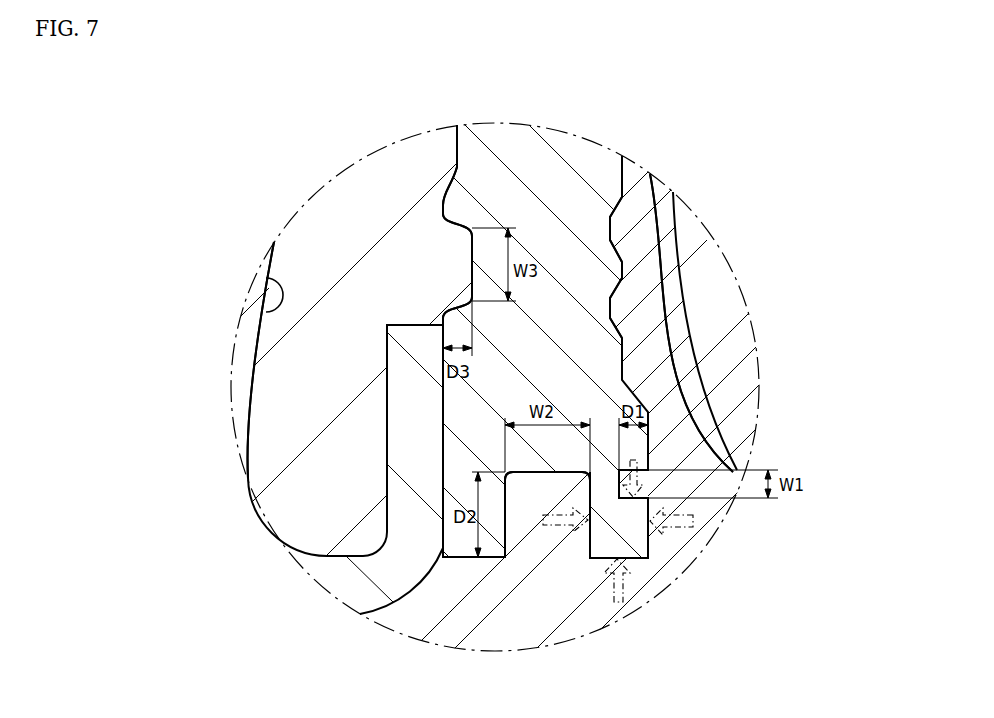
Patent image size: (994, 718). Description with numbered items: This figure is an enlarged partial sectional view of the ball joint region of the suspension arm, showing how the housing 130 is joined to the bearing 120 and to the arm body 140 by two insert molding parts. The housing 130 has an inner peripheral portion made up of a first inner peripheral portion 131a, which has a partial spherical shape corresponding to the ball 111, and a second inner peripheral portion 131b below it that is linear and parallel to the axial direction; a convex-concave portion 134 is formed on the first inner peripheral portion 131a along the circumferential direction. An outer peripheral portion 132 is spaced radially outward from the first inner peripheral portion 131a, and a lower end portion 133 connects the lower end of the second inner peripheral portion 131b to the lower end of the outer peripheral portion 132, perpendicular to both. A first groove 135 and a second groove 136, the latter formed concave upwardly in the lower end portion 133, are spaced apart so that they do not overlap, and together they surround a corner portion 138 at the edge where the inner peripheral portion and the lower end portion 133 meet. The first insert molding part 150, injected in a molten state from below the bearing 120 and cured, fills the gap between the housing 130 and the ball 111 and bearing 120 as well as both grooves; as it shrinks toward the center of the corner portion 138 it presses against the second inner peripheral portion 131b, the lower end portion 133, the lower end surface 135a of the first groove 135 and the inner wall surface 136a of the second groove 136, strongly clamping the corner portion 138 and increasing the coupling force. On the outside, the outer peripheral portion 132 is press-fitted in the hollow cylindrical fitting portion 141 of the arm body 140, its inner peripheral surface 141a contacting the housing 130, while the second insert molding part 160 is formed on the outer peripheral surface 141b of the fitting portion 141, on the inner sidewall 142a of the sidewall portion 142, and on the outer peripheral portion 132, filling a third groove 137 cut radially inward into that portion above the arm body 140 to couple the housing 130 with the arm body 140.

The ball 111 is at (727, 326).
The bearing 120 is at (676, 313).
The housing 130 is at (563, 173).
The first inner peripheral portion 131a is at (628, 220).
The second inner peripheral portion 131b is at (652, 541).
The outer peripheral portion 132 is at (444, 190).
The lower end portion 133 is at (637, 562).
The convex-concave portion 134 is at (632, 257).
The first groove 135 is at (652, 478).
The lower end surface of the first groove 135a is at (650, 498).
The second groove 136 is at (532, 522).
The inner wall surface of the second groove 136a is at (577, 543).
The third groove 137 is at (468, 263).
The corner portion 138 is at (636, 562).
The arm body 140 is at (398, 615).
The fitting portion 141 is at (398, 447).
The inner peripheral surface of the fitting portion 141a is at (447, 458).
The outer peripheral surface of the fitting portion 141b is at (386, 410).
The sidewall portion 142 is at (247, 361).
The inner sidewall 142a is at (266, 279).
The first insert molding part 150 is at (670, 407).
The second insert molding part 160 is at (317, 227).